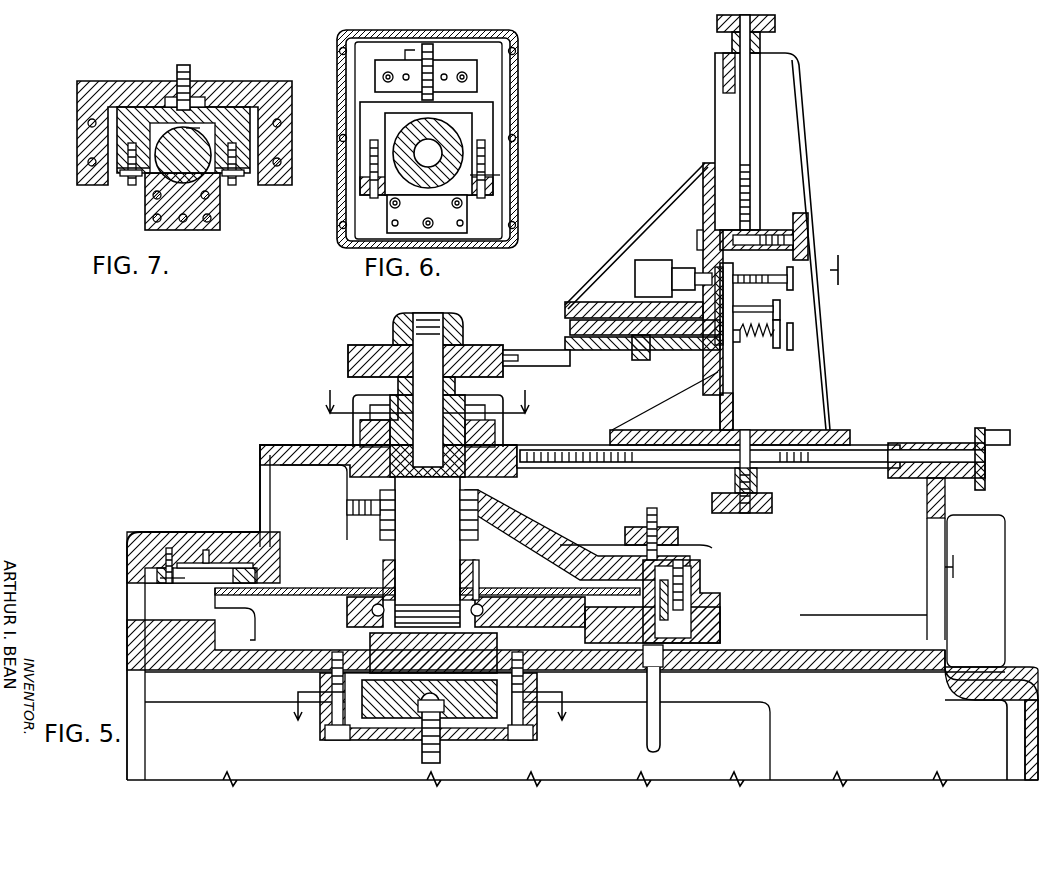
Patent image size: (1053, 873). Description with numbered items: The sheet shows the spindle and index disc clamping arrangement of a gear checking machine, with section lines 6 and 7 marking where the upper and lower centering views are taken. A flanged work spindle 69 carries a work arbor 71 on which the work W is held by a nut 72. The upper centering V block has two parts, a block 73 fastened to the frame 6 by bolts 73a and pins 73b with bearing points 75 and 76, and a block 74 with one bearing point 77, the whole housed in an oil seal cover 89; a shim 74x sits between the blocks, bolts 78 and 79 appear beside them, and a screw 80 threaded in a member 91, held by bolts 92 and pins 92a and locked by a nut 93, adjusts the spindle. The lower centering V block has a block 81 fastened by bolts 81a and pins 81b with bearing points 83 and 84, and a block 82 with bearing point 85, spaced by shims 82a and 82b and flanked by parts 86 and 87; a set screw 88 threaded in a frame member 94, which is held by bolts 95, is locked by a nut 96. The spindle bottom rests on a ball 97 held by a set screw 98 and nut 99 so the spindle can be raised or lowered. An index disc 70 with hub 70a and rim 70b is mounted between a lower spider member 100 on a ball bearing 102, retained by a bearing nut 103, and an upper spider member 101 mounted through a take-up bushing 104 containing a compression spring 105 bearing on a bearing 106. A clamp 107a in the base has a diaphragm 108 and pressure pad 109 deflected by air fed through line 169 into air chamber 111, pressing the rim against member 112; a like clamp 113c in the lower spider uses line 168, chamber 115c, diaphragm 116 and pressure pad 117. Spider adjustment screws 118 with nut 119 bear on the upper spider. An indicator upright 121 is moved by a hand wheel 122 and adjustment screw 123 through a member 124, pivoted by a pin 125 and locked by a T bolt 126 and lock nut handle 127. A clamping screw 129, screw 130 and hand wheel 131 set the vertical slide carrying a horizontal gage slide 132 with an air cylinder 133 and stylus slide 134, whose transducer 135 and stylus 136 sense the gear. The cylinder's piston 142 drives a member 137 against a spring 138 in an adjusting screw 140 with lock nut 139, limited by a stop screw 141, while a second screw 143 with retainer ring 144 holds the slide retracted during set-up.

In FIG. 5, the frame 6 is at (110, 565).
In FIG. 5, the section line 7- 7 is at (428, 720).
In FIG. 7, the work spindle 69 is at (181, 149).
In FIG. 6, the work spindle 69 is at (455, 128).
In FIG. 5, the work spindle 69 is at (470, 490).
In FIG. 5, the index disc 70 is at (330, 591).
In FIG. 5, the hub 70a is at (383, 568).
In FIG. 5, the rim 70b is at (215, 610).
In FIG. 5, the work arbor 71 is at (428, 313).
In FIG. 5, the nut 72 is at (393, 325).
In FIG. 6, the block 73 is at (387, 228).
In FIG. 6, the bolts 73a is at (433, 228).
In FIG. 6, the pins 73b is at (428, 142).
In FIG. 6, the block 74 is at (495, 102).
In FIG. 5, the block 74 is at (503, 434).
In FIG. 6, the shim 74x is at (500, 175).
In FIG. 6, the bearing point 75 is at (410, 190).
In FIG. 6, the bearing point 76 is at (448, 190).
In FIG. 6, the bearing point 77 is at (420, 118).
In FIG. 6, the bolt 78 is at (372, 198).
In FIG. 6, the bolt 79 is at (481, 198).
In FIG. 6, the set screw 80 is at (434, 50).
In FIG. 7, the block 81 is at (163, 230).
In FIG. 7, the bolts 81a is at (183, 225).
In FIG. 7, the pins 81b is at (210, 225).
In FIG. 7, the block 82 is at (132, 107).
In FIG. 5, the block 82 is at (480, 718).
In FIG. 7, the shim 82a is at (112, 185).
In FIG. 7, the shim 82b is at (248, 185).
In FIG. 7, the bearing point 83 is at (140, 185).
In FIG. 7, the bearing point 84 is at (225, 183).
In FIG. 7, the bearing point 85 is at (197, 125).
In FIG. 7, the shelf 86 is at (235, 185).
In FIG. 7, the shelf 87 is at (125, 180).
In FIG. 7, the set screw 88 is at (185, 65).
In FIG. 6, the oil seal cover 89 is at (512, 70).
In FIG. 5, the oil seal cover 89 is at (485, 405).
In FIG. 6, the member 91 is at (382, 62).
In FIG. 6, the bolts 92 is at (470, 77).
In FIG. 6, the pins 92a is at (449, 73).
In FIG. 6, the nut 93 is at (403, 48).
In FIG. 7, the frame member 94 is at (243, 80).
In FIG. 5, the frame member 94 is at (325, 740).
In FIG. 7, the bolts 95 is at (86, 163).
In FIG. 5, the bolts 95 is at (528, 740).
In FIG. 7, the nut 96 is at (188, 85).
In FIG. 5, the ball 97 is at (421, 712).
In FIG. 5, the set screw 98 is at (420, 763).
In FIG. 5, the nut 99 is at (441, 740).
In FIG. 5, the lower spider member 100 is at (560, 627).
In FIG. 5, the upper spider member 101 is at (512, 505).
In FIG. 5, the ball bearing 102 is at (480, 585).
In FIG. 5, the bearing nut 103 is at (478, 627).
In FIG. 5, the take-up bushing 104 is at (378, 522).
In FIG. 5, the compression spring 105 is at (380, 500).
In FIG. 5, the bearing 106 is at (478, 532).
In FIG. 5, the clamp 107a is at (160, 575).
In FIG. 5, the diaphragm 108 is at (164, 584).
In FIG. 5, the pressure pad 109 is at (198, 600).
In FIG. 5, the air chamber 111 is at (220, 563).
In FIG. 5, the member 112 is at (190, 618).
In FIG. 5, the clamp 113c is at (680, 660).
In FIG. 5, the chamber 115c is at (655, 667).
In FIG. 5, the diaphragm 116 is at (718, 605).
In FIG. 5, the pressure pad 117 is at (648, 610).
In FIG. 5, the spider adjustment screws 118 is at (658, 510).
In FIG. 5, the nut 119 is at (660, 530).
In FIG. 5, the indicator upright 121 is at (715, 78).
In FIG. 5, the hand wheel 122 is at (990, 490).
In FIG. 5, the adjustment screw 123 is at (848, 465).
In FIG. 5, the member 124 is at (770, 470).
In FIG. 5, the pivot pin 125 is at (660, 425).
In FIG. 5, the T bolt 126 is at (755, 428).
In FIG. 5, the lock nut handle 127 is at (772, 512).
In FIG. 5, the clamping screw 129 is at (795, 213).
In FIG. 5, the screw 130 is at (750, 88).
In FIG. 5, the hand wheel 131 is at (777, 23).
In FIG. 5, the horizontal gage slide 132 is at (565, 308).
In FIG. 5, the air cylinder 133 is at (635, 280).
In FIG. 5, the stylus slide 134 is at (570, 328).
In FIG. 5, the transducer 135 is at (600, 366).
In FIG. 5, the stylus 136 is at (545, 358).
In FIG. 5, the member 137 is at (705, 347).
In FIG. 5, the spring 138 is at (745, 345).
In FIG. 5, the lock nut 139 is at (778, 348).
In FIG. 5, the adjusting screw 140 is at (793, 336).
In FIG. 5, the adjustable stop screw 141 is at (792, 290).
In FIG. 5, the piston 142 is at (700, 258).
In FIG. 5, the adjustment screw 143 is at (780, 311).
In FIG. 5, the retainer ring 144 is at (715, 292).
In FIG. 5, the line 168 is at (662, 722).
In FIG. 5, the line 169 is at (206, 550).
In FIG. 5, the work W is at (348, 350).